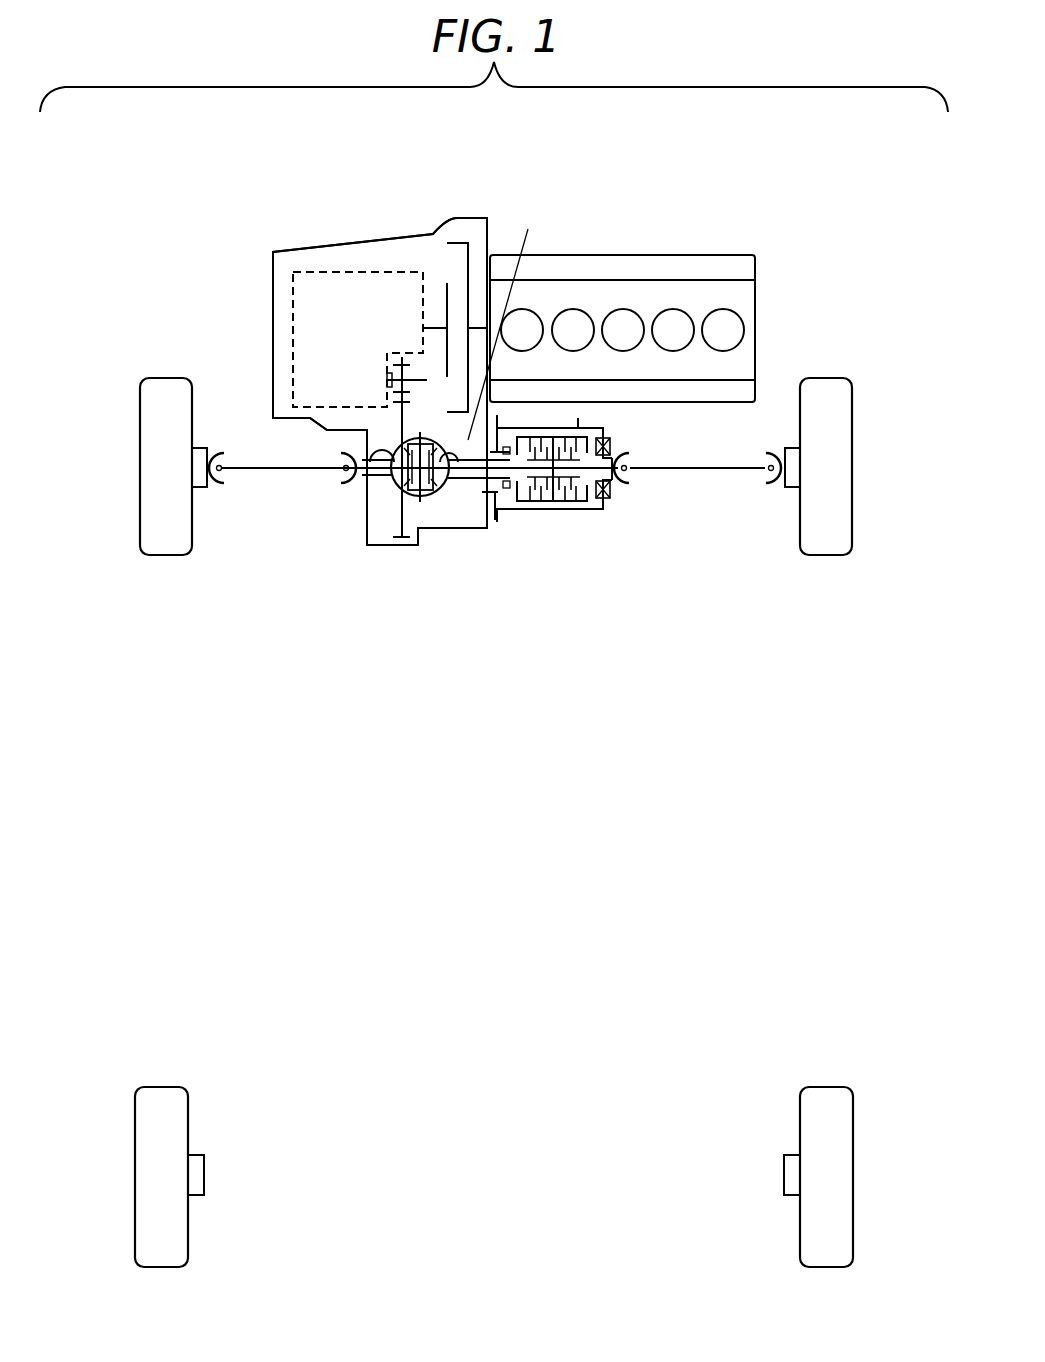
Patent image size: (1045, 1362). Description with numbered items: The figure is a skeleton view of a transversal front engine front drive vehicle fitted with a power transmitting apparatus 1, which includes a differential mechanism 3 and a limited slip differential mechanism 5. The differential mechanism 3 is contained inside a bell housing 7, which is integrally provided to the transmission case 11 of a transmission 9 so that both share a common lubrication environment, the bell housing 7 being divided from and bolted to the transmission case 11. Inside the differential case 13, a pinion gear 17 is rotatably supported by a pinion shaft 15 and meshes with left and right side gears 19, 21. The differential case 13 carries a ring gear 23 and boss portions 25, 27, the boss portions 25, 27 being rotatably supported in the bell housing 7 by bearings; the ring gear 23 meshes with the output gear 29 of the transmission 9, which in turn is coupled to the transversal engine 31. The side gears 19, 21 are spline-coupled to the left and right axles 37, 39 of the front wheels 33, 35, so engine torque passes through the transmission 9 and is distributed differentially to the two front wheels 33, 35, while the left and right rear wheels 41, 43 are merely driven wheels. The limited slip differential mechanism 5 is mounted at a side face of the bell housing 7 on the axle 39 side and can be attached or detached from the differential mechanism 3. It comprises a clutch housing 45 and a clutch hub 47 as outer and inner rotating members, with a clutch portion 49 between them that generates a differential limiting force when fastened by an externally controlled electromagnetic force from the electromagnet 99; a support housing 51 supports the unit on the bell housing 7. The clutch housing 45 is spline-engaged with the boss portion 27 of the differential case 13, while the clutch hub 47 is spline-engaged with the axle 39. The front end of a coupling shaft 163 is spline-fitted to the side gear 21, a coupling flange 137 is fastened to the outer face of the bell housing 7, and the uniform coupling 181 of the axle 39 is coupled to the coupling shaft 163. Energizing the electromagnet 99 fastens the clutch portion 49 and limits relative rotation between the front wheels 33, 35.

The power transmitting apparatus 1 is at (501, 523).
The differential mechanism 3 is at (426, 506).
The limited slip differential mechanism 5 is at (586, 503).
The bell housing 7 is at (372, 546).
The transmission 9 is at (401, 236).
The transmission case 11 is at (318, 248).
The differential case 13 is at (404, 493).
The pinion shaft 15 is at (449, 478).
The pinion gear 17 is at (418, 504).
The left side gear 19 is at (391, 481).
The right side gear 21 is at (466, 476).
The ring gear 23 is at (400, 540).
The boss portion 25 is at (366, 443).
The boss portion 27 is at (509, 319).
The output gear 29 is at (395, 357).
The transversal engine 31 is at (632, 252).
The front wheel 33 is at (170, 378).
The front wheel 35 is at (828, 378).
The left axle 37 is at (274, 479).
The right axle 39 is at (669, 475).
The left rear wheel 41 is at (158, 1087).
The right rear wheel 43 is at (823, 1087).
The clutch housing 45 is at (579, 510).
The clutch hub 47 is at (559, 523).
The clutch portion 49 is at (601, 510).
The support housing 51 is at (535, 511).
The electromagnet 99 is at (599, 498).
The coupling flange 137 is at (498, 423).
The coupling shaft 163 is at (607, 473).
The uniform coupling 181 is at (628, 457).